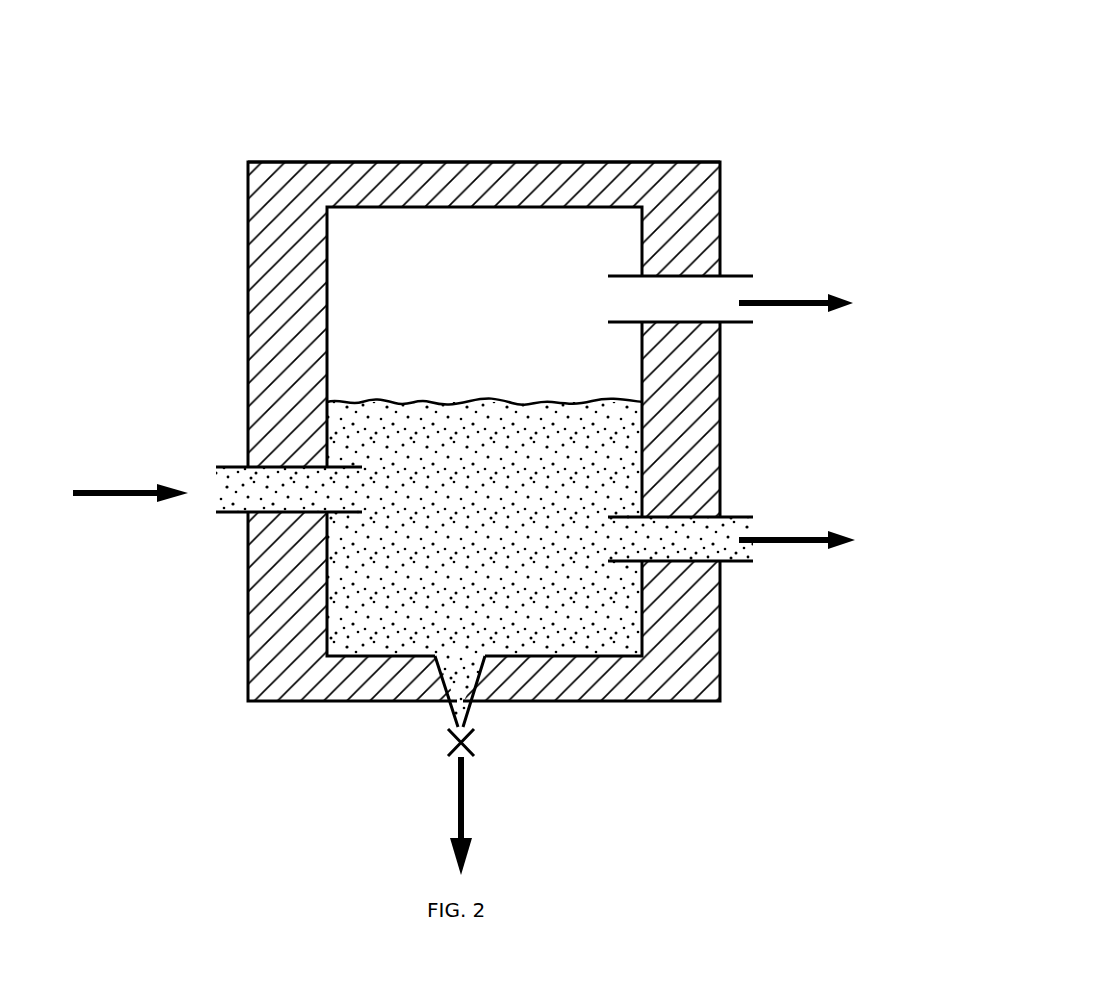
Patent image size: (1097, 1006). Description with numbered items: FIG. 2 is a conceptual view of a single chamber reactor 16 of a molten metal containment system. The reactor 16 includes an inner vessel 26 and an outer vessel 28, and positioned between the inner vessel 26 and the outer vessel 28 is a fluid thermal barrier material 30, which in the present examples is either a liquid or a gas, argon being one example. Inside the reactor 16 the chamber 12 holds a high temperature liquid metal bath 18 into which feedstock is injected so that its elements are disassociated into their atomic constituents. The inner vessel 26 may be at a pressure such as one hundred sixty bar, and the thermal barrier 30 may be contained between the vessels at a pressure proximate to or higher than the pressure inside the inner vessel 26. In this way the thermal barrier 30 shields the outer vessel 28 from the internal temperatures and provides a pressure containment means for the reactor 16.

The first chamber 12 is at (490, 305).
The reactor 16 is at (693, 78).
The liquid metal bath 18 is at (503, 528).
The inner vessel 26 is at (432, 207).
The outer vessel 28 is at (720, 205).
The fluid thermal barrier material 30 is at (693, 437).